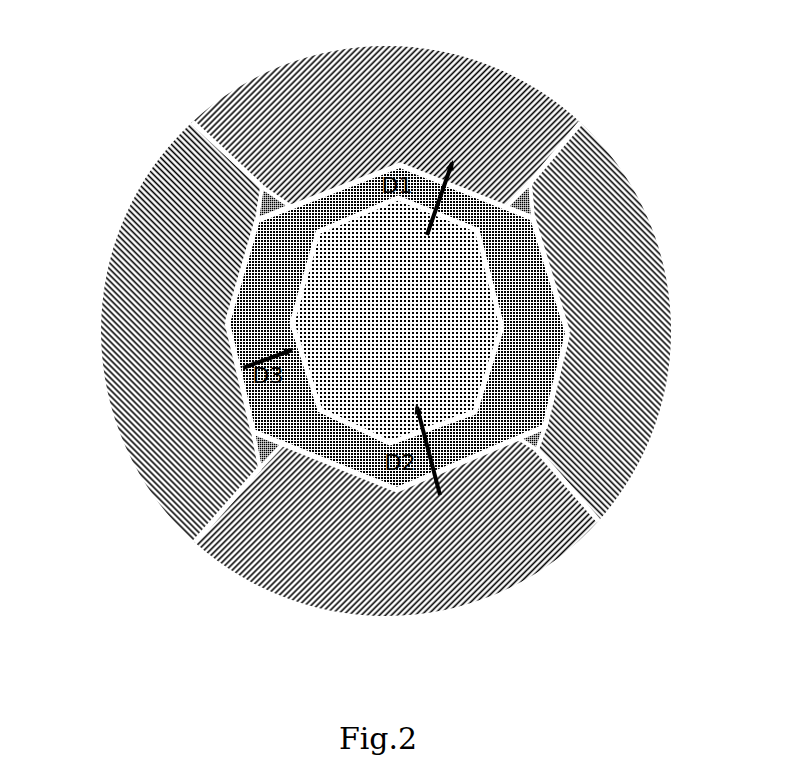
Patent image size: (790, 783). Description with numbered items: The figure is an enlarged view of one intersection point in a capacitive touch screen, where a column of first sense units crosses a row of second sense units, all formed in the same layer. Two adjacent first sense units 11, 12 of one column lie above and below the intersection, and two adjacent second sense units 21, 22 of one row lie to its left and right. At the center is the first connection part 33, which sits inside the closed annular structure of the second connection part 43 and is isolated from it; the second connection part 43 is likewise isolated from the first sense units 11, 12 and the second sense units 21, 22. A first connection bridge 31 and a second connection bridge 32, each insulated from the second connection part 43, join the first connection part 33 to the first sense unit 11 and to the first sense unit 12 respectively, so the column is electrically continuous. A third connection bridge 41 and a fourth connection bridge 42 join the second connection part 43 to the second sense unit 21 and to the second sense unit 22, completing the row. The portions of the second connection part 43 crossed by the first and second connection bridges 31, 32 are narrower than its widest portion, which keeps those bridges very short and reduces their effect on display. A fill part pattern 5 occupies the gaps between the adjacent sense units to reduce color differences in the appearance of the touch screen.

The fill part pattern 5 is at (262, 187).
The first sense unit 11 is at (288, 122).
The first sense unit 12 is at (399, 563).
The second sense unit 21 is at (145, 402).
The second sense unit 22 is at (620, 304).
The first connection bridge 31 is at (468, 151).
The second connection bridge 32 is at (440, 493).
The first connection part 33 is at (466, 292).
The third connection bridge 41 is at (260, 277).
The fourth connection bridge 42 is at (533, 353).
The second connection part 43 is at (248, 335).